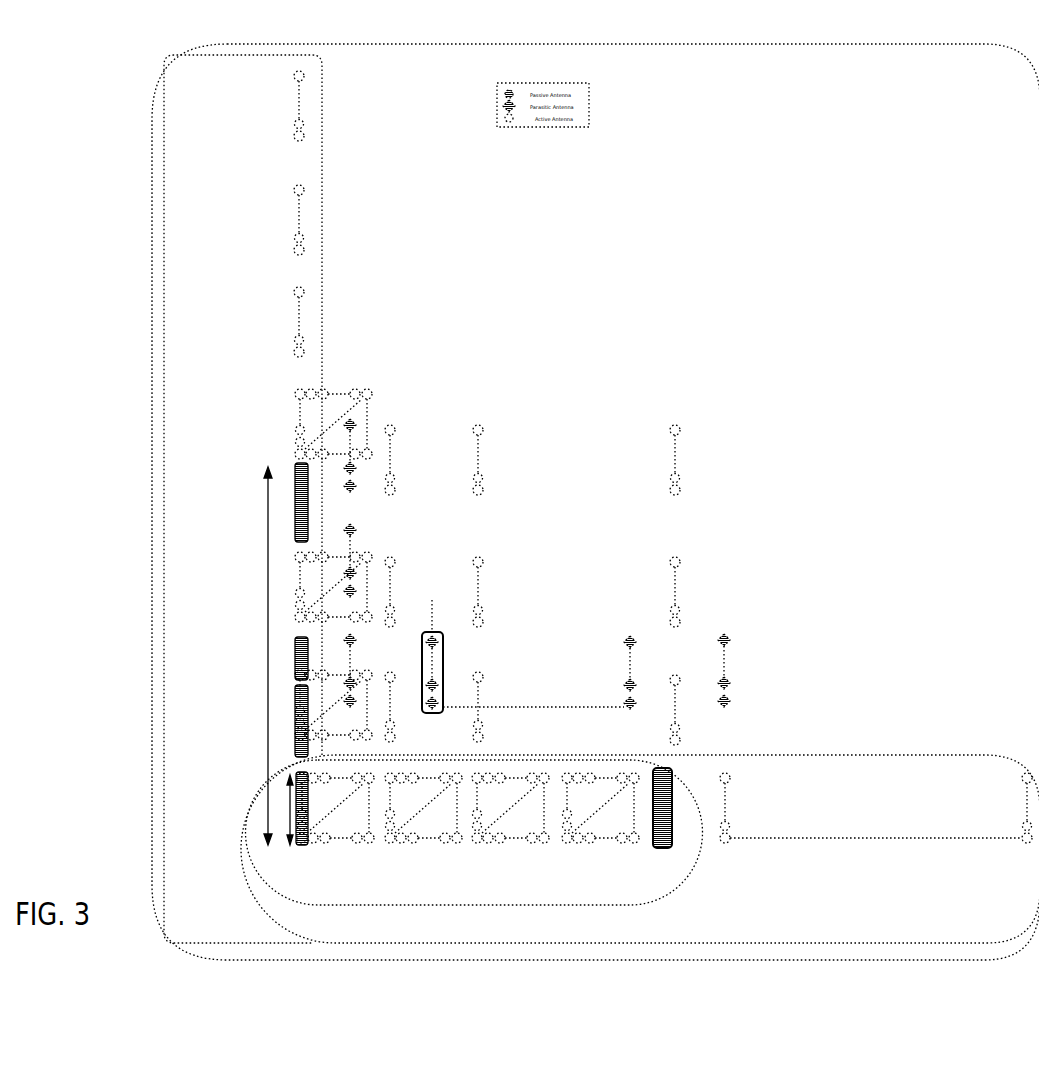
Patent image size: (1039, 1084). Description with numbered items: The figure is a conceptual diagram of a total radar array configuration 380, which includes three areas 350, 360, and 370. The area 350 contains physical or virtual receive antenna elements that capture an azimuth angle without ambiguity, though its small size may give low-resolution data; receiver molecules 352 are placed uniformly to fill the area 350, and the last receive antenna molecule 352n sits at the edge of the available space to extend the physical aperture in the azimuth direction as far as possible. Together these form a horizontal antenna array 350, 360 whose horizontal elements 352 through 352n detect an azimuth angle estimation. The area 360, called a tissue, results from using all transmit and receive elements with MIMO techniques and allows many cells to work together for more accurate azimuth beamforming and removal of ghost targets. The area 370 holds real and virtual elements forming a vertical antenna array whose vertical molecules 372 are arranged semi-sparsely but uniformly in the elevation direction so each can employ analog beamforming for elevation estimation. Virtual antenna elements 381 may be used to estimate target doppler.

The area 350 is at (474, 832).
The receiver molecules 352 is at (300, 848).
The last receive antenna molecule 352n is at (660, 848).
The area 360 is at (640, 849).
The area 370 is at (243, 499).
The molecules 372 is at (297, 462).
The total radar array configuration 380 is at (595, 502).
The virtual antenna elements 381 is at (300, 287).